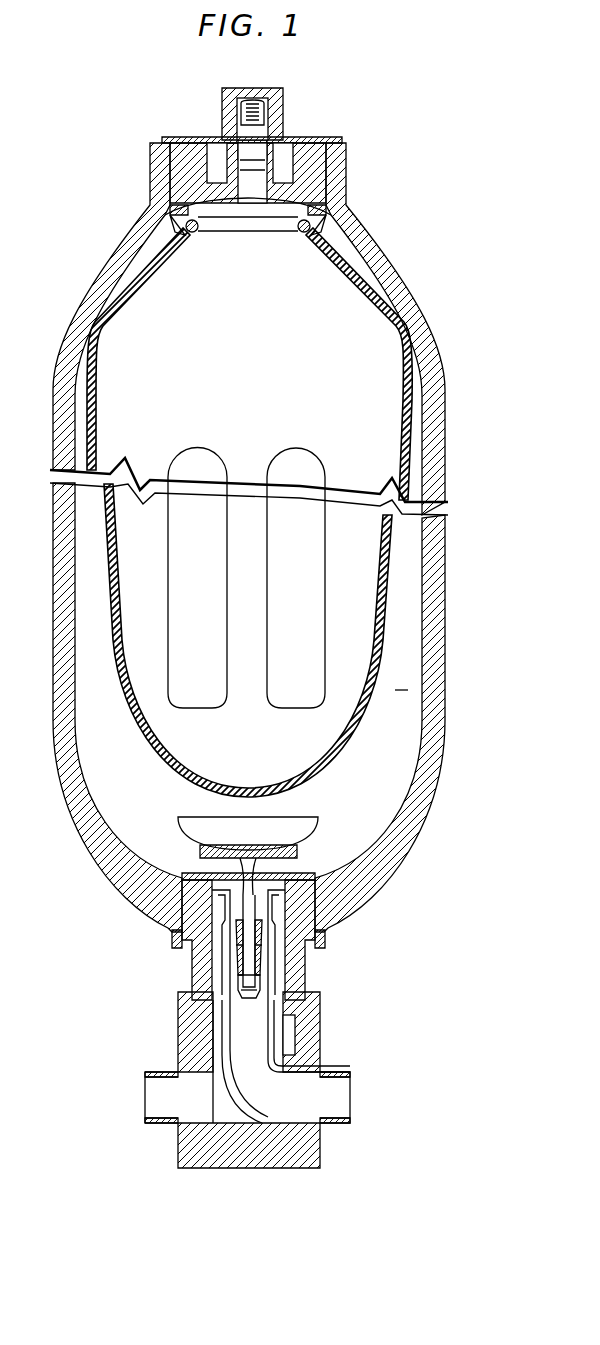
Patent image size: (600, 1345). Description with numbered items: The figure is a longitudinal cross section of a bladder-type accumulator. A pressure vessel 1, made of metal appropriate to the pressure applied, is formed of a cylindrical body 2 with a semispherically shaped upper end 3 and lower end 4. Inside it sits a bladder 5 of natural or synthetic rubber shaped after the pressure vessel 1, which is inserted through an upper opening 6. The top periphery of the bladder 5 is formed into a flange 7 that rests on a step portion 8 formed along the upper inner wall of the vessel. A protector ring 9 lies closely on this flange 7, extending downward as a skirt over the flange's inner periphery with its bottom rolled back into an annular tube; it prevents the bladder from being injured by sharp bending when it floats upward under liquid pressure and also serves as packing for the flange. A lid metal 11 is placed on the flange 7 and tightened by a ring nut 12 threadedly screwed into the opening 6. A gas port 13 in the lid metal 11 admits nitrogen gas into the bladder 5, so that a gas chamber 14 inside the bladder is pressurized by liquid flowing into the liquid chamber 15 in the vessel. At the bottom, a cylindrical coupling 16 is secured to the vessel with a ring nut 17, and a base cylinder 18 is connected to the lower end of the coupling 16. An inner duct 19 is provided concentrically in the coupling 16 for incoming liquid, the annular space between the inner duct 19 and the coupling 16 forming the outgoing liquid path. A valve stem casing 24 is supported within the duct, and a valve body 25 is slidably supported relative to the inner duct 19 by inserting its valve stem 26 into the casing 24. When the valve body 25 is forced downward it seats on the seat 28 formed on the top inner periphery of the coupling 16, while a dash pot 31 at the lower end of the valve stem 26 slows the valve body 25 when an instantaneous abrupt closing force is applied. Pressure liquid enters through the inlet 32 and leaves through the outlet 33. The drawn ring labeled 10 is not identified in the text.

The pressure vessel 1 is at (271, 621).
The cylindrical body 2 is at (434, 362).
The upper end 3 is at (264, 329).
The lower end 4 is at (410, 830).
The bladder 5 is at (392, 579).
The upper opening 6 is at (236, 145).
The flange 7 is at (172, 210).
The step portion 8 is at (178, 228).
The protector ring 9 is at (200, 222).
The bead ring 10 is at (194, 234).
The lid metal 11 is at (207, 189).
The ring nut 12 is at (312, 143).
The gas port 13 is at (258, 130).
The gas chamber 14 is at (357, 332).
The liquid chamber 15 is at (408, 690).
The cylindrical coupling 16 is at (298, 968).
The ring nut 17 is at (174, 940).
The base cylinder 18 is at (305, 1150).
The inner duct 19 is at (285, 1032).
The valve stem casing 24 is at (240, 960).
The valve body 25 is at (185, 848).
The valve stem 26 is at (258, 905).
The seat 28 is at (285, 872).
The dash pot 31 is at (235, 990).
The inlet 32 is at (335, 1102).
The outlet 33 is at (160, 1106).